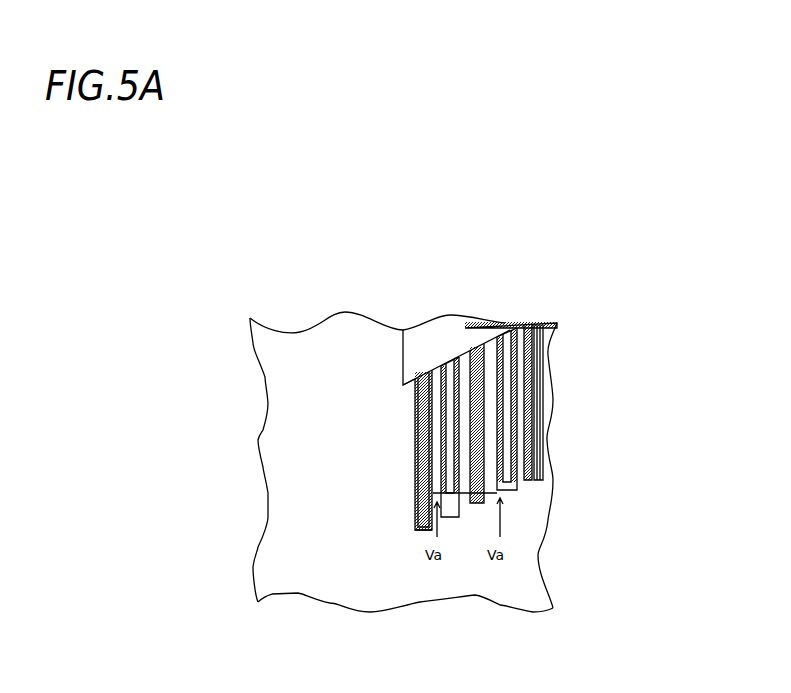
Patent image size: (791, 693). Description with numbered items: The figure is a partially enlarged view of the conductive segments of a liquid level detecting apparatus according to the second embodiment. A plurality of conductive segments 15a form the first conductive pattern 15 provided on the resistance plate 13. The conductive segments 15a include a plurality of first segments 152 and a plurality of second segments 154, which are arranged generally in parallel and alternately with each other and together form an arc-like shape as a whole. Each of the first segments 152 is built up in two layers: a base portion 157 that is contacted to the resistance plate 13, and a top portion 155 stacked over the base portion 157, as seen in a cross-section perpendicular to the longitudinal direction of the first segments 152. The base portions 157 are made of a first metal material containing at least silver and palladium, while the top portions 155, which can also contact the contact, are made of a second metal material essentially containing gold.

The resistance plate 13 is at (522, 563).
The first conductive pattern 15 is at (410, 398).
The conductive segments 15a is at (700, 393).
The first segments 152 is at (488, 348).
The second segments 154 is at (475, 345).
The top portions 155 is at (548, 403).
The base portions 157 is at (548, 352).